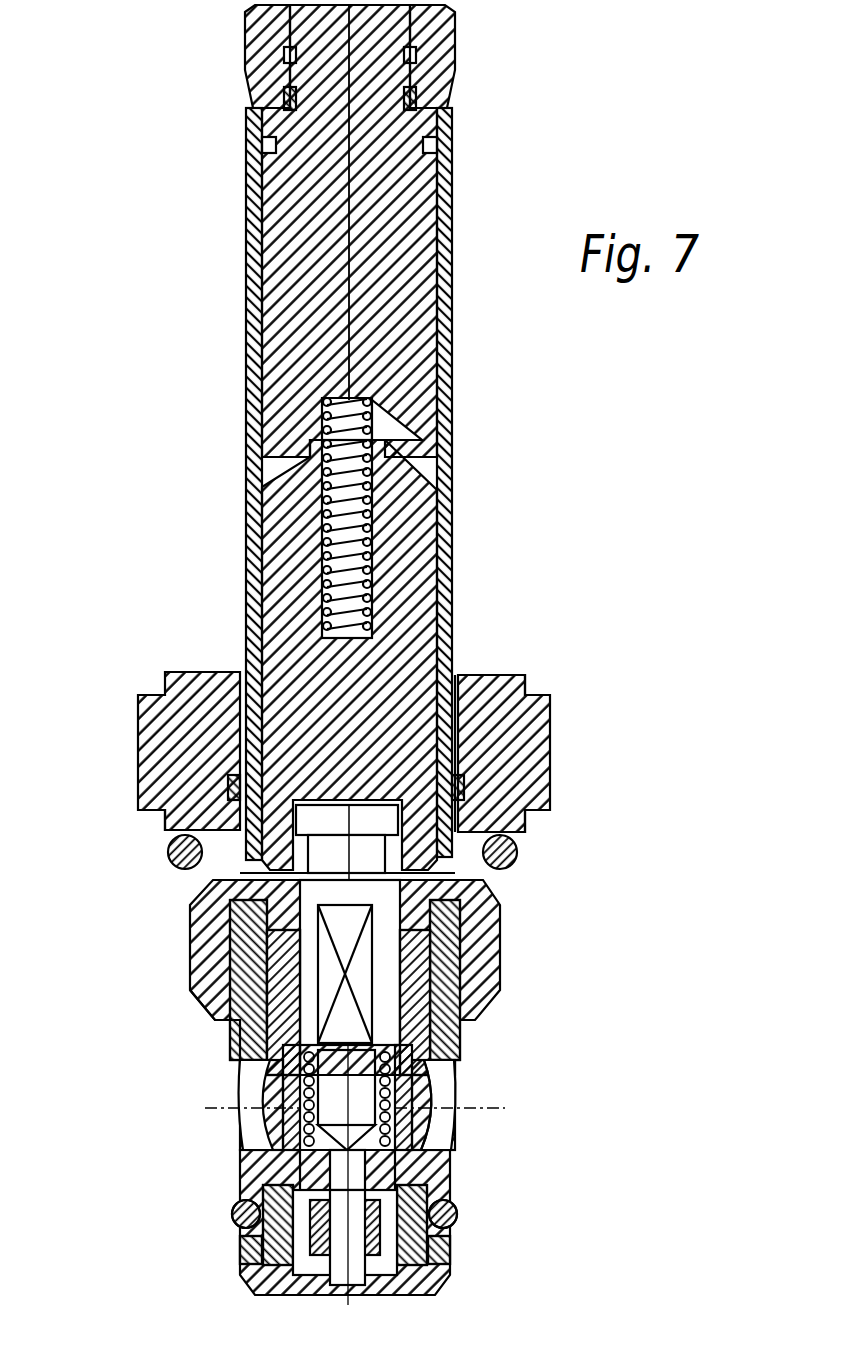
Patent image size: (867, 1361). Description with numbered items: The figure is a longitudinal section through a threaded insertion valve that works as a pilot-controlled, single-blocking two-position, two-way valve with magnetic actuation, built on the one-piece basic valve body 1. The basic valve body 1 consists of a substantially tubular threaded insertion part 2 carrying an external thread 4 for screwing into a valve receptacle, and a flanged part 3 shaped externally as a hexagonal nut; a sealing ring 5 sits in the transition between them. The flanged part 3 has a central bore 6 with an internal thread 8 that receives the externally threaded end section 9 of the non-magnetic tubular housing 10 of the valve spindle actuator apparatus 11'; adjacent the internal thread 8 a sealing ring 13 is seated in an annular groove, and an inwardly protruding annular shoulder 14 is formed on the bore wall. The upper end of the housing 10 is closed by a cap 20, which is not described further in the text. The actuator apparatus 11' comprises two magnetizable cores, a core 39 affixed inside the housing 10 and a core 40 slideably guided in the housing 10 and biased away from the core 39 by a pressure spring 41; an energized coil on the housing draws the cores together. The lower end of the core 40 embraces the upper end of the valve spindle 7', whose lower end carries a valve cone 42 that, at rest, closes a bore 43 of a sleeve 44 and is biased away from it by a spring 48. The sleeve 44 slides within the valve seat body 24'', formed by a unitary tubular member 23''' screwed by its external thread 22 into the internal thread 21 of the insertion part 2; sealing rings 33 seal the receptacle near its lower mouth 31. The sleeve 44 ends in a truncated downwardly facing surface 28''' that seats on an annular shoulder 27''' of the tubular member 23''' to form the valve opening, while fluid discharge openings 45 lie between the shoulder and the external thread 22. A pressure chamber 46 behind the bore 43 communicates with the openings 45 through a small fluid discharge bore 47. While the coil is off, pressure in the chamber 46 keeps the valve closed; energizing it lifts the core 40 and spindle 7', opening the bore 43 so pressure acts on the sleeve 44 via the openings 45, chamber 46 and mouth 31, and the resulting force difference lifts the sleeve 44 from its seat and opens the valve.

The basic valve body 1 is at (560, 909).
The threaded insertion part 2 is at (500, 950).
The flanged part 3 is at (550, 747).
The external thread 4 is at (505, 985).
The sealing ring 5 is at (518, 855).
The central bore 6 is at (440, 823).
The valve spindle 7' is at (227, 856).
The internal thread 8 is at (490, 677).
The externally threaded end section 9 is at (455, 680).
The tubular housing 10 is at (452, 210).
The valve spindle actuator apparatus 11' is at (518, 496).
The sealing ring 13 is at (230, 792).
The annular shoulder 14 is at (232, 830).
The cap nut 20 is at (466, 52).
The internal thread 21 is at (228, 930).
The external thread 22 is at (230, 958).
The tubular member 23''' is at (157, 1032).
The valve seat body 24'' is at (112, 1172).
The annular shoulder 27''' is at (191, 1232).
The truncated downwardly facing surface 28''' is at (260, 1175).
The mouth 31 is at (385, 1277).
The sealing rings 33 is at (452, 1218).
The core 39 is at (246, 258).
The core 40 is at (245, 575).
The pressure spring 41 is at (375, 410).
The valve cone 42 is at (400, 1140).
The bore 43 is at (342, 1172).
The sleeve 44 is at (270, 1068).
The fluid discharge openings 45 is at (428, 1078).
The pressure chamber 46 is at (295, 1102).
The fluid discharge bore 47 is at (418, 1105).
The spring 48 is at (292, 1128).